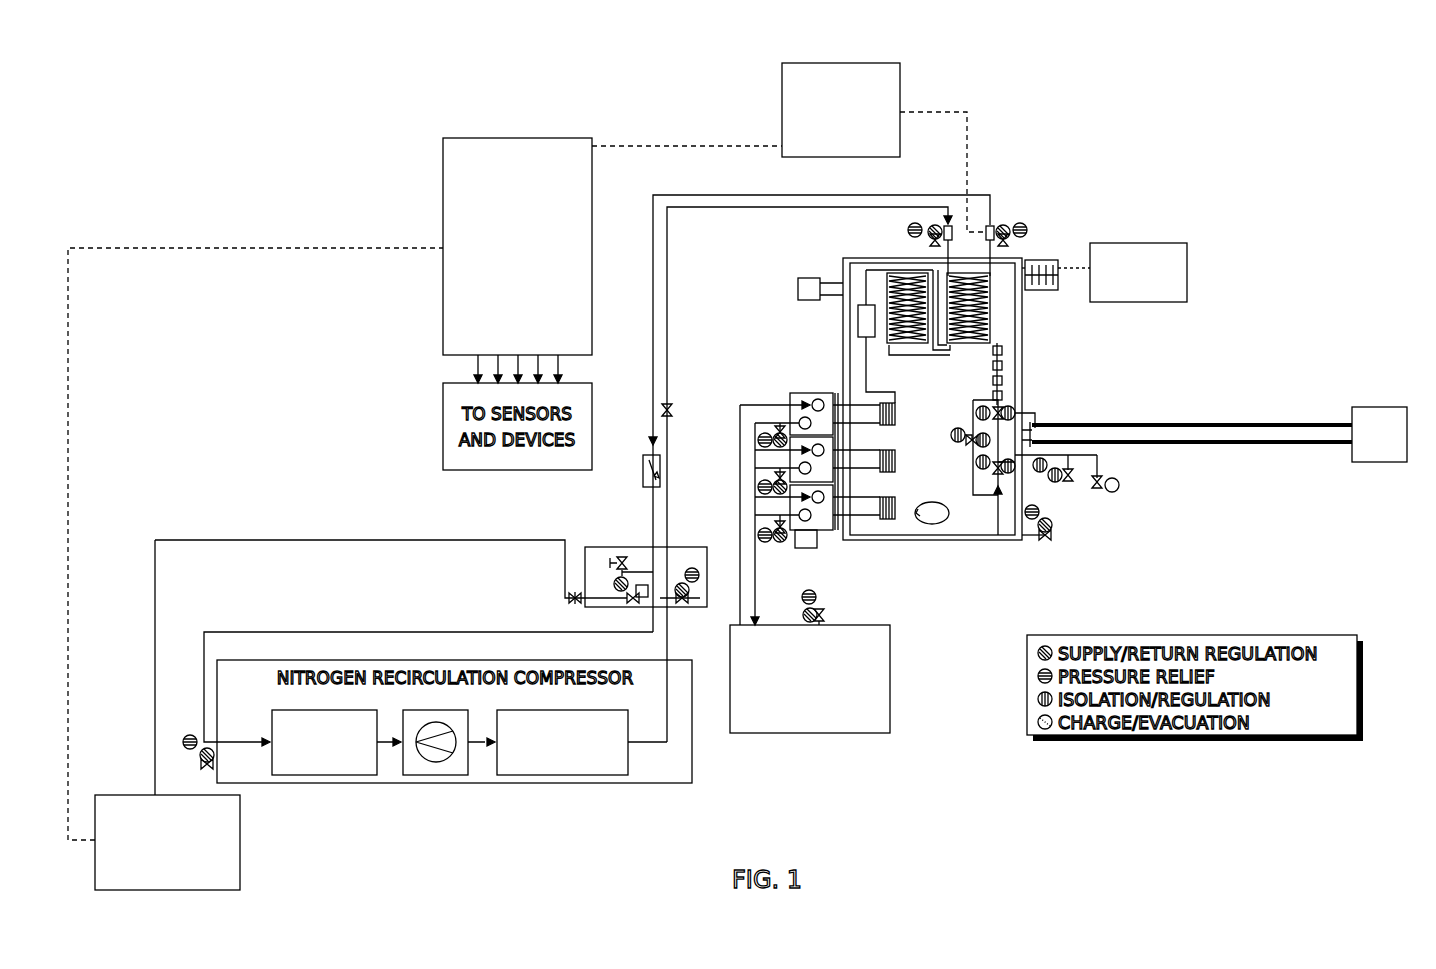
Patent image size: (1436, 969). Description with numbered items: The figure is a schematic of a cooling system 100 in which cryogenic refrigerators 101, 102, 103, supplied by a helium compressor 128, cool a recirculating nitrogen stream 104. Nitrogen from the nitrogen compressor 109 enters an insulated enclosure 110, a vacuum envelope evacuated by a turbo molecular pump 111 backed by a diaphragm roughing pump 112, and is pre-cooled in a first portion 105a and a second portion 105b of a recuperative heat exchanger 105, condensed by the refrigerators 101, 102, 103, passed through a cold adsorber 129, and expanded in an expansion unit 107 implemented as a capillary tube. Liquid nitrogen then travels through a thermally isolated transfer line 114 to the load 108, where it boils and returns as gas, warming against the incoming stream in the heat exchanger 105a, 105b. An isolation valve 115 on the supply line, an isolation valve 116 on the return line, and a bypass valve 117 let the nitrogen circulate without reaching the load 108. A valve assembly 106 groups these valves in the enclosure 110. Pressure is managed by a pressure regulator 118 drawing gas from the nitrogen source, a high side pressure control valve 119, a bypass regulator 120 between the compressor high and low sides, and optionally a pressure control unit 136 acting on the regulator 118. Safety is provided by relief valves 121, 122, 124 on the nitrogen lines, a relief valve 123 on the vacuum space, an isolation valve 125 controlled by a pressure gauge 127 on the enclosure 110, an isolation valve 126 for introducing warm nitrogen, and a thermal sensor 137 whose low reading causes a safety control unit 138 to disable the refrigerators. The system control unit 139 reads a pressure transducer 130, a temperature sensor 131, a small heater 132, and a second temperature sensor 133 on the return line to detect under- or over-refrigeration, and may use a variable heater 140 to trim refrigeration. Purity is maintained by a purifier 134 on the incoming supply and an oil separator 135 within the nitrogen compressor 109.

The cooling system 100 is at (1060, 55).
The cryogenic refrigerator 101 is at (897, 412).
The cryogenic refrigerator 102 is at (897, 460).
The cryogenic refrigerator 103 is at (897, 505).
The nitrogen stream 104 is at (712, 195).
The recuperative heat exchanger 105 is at (885, 290).
The first portion of recuperative heat exchanger 105a is at (918, 273).
The second portion of recuperative heat exchanger 105b is at (990, 303).
The valve assembly 106 is at (963, 488).
The expansion unit 107 is at (928, 524).
The load 108 is at (1385, 407).
The nitrogen compressor 109 is at (440, 775).
The insulated enclosure 110 is at (1022, 545).
The turbo molecular pump 111 is at (1045, 260).
The diaphragm roughing pump 112 is at (1165, 243).
The transfer line 114 is at (1195, 446).
The isolation valve 115 is at (1068, 480).
The isolation valve 116 is at (1015, 413).
The bypass valve 117 is at (957, 428).
The pressure regulator 118 is at (570, 596).
The high side pressure control valve 119 is at (688, 550).
The bypass regulator 120 is at (618, 557).
The relief valve 121 is at (918, 222).
The relief valve 122 is at (1026, 225).
The relief valve 123 is at (1050, 538).
The relief valve 124 is at (1100, 488).
The isolation valve 125 is at (672, 410).
The isolation valve 126 is at (643, 470).
The pressure gauge 127 is at (798, 289).
The compressor 128 is at (890, 685).
The cold adsorber 129 is at (858, 320).
The pressure transducer 130 is at (1003, 395).
The temperature sensor 131 is at (1003, 381).
The small heater 132 is at (1003, 366).
The second temperature sensor 133 is at (1003, 351).
The purifier 134 is at (330, 775).
The oil separator 135 is at (588, 775).
The pressure control unit 136 is at (240, 845).
The thermal sensor 137 is at (1000, 224).
The safety control unit 138 is at (805, 63).
The system control unit 139 is at (484, 138).
The variable heater 140 is at (812, 548).